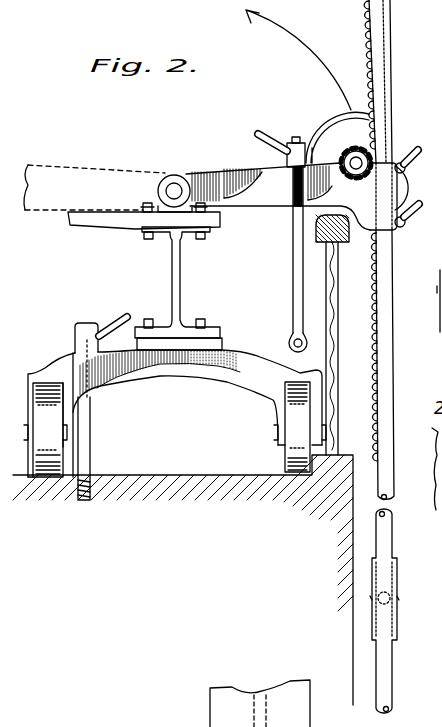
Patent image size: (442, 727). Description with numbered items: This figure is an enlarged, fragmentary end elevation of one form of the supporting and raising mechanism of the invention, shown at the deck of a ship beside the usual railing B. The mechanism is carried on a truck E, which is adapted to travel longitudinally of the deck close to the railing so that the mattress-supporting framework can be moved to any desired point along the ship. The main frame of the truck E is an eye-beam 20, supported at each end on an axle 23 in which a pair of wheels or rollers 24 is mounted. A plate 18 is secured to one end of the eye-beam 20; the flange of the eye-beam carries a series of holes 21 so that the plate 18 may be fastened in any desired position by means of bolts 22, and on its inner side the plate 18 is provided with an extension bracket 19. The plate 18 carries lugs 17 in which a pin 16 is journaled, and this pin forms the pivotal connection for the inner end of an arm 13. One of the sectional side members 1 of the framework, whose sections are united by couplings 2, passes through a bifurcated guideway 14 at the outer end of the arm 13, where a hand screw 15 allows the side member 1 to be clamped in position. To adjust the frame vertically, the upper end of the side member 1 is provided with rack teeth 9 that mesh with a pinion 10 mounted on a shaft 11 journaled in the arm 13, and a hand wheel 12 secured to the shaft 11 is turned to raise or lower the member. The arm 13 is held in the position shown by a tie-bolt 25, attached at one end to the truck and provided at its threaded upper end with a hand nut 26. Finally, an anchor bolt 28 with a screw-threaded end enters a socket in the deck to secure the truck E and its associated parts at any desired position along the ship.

The side member 1 is at (380, 360).
The coupling 2 is at (398, 621).
The rack teeth 9 is at (372, 320).
The pinion 10 is at (346, 158).
The shaft 11 is at (353, 155).
The hand wheel 12 is at (324, 124).
The arm 13 is at (49, 167).
The bifurcated guideway 14 is at (390, 192).
The hand screw 15 is at (418, 146).
The pin 16 is at (172, 183).
The lug 17 is at (184, 180).
The plate 18 is at (203, 239).
The extension bracket 19 is at (80, 212).
The eye-beam 20 is at (170, 260).
The holes 21 is at (215, 726).
The bolt 22 is at (145, 206).
The axle 23 is at (230, 362).
The wheel 24 is at (55, 479).
The tie-bolt 25 is at (292, 258).
The hand nut 26 is at (276, 141).
The anchor bolt 28 is at (88, 443).
The railing B is at (350, 235).
The truck E is at (155, 392).